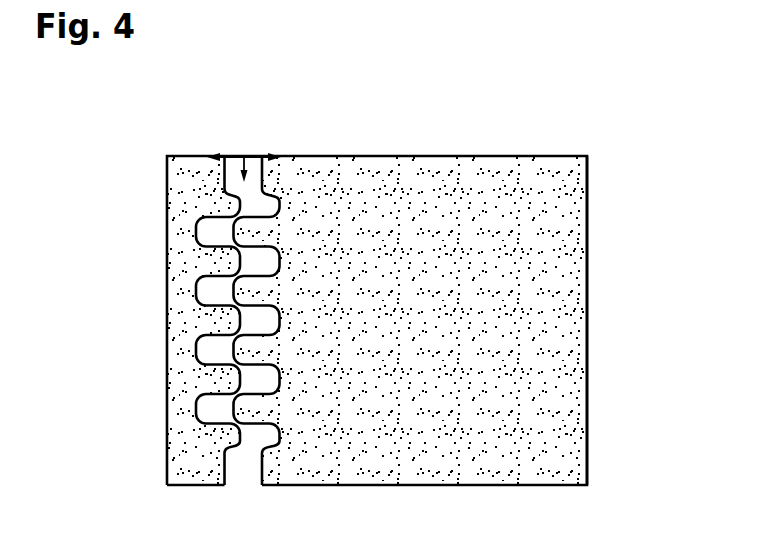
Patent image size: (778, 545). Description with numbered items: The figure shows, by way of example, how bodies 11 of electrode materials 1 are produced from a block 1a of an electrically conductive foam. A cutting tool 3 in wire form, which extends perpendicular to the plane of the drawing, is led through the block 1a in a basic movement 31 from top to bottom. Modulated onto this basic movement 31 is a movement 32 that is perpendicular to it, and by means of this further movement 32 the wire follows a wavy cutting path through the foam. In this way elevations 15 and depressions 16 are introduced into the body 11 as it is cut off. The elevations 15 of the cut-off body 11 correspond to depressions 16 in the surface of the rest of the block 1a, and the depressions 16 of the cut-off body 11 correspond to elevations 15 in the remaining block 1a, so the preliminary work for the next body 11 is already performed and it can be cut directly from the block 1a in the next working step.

The electrode material 1 is at (322, 320).
The body 11 is at (168, 264).
The block 1a is at (587, 210).
The cutting tool 3 is at (237, 281).
The basic movement 31 is at (243, 162).
The movement 32 is at (231, 156).
The elevations 15 is at (237, 281).
The depressions 16 is at (196, 232).